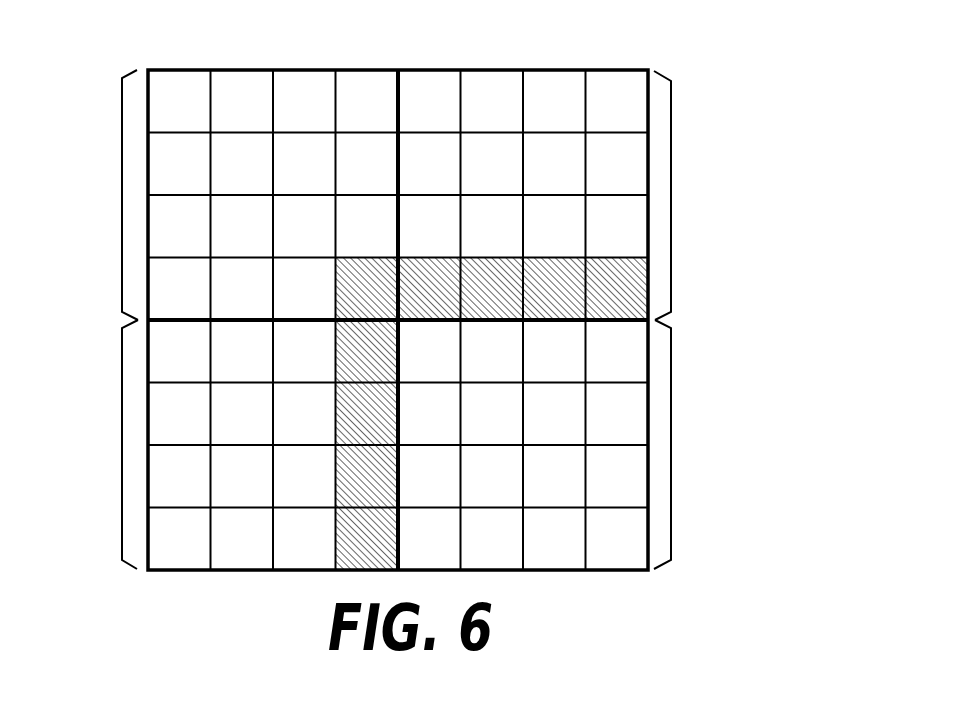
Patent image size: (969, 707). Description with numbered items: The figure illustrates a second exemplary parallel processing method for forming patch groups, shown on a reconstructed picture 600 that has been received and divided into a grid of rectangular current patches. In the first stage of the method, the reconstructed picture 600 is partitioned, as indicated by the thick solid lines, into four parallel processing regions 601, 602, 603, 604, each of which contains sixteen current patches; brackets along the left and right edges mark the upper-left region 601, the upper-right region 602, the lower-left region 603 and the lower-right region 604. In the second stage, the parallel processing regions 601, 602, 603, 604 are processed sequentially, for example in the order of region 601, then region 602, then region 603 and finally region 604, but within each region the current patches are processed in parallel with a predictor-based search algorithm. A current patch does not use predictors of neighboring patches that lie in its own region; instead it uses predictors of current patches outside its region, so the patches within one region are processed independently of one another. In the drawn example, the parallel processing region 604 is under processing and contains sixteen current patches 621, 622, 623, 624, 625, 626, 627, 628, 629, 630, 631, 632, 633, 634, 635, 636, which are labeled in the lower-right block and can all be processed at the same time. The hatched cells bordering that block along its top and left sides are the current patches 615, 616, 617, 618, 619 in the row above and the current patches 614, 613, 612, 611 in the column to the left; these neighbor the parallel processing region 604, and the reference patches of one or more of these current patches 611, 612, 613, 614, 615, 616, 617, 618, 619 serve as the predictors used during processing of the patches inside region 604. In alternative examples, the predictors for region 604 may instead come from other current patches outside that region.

The reconstructed picture 600 is at (757, 42).
The parallel processing region 601 is at (122, 195).
The parallel processing region 602 is at (671, 190).
The parallel processing region 603 is at (122, 447).
The parallel processing region 604 is at (671, 440).
The current patch 611 is at (367, 539).
The current patch 612 is at (367, 476).
The current patch 613 is at (367, 414).
The current patch 614 is at (367, 351).
The current patch 615 is at (367, 289).
The current patch 616 is at (429, 289).
The current patch 617 is at (492, 289).
The current patch 618 is at (554, 289).
The current patch 619 is at (617, 289).
The current patch 621 is at (429, 351).
The current patch 622 is at (492, 351).
The current patch 623 is at (554, 351).
The current patch 624 is at (617, 351).
The current patch 625 is at (429, 414).
The current patch 626 is at (492, 414).
The current patch 627 is at (554, 414).
The current patch 628 is at (617, 414).
The current patch 629 is at (429, 476).
The current patch 630 is at (492, 476).
The current patch 631 is at (554, 476).
The current patch 632 is at (617, 476).
The current patch 633 is at (429, 539).
The current patch 634 is at (492, 539).
The current patch 635 is at (554, 539).
The current patch 636 is at (617, 539).